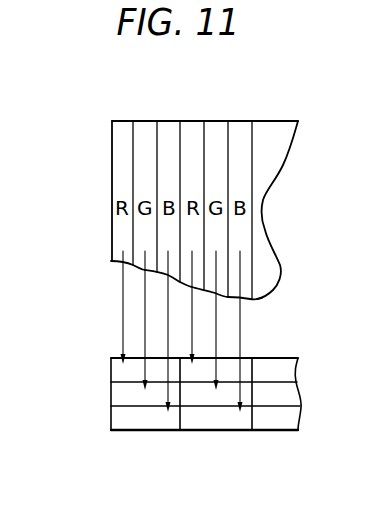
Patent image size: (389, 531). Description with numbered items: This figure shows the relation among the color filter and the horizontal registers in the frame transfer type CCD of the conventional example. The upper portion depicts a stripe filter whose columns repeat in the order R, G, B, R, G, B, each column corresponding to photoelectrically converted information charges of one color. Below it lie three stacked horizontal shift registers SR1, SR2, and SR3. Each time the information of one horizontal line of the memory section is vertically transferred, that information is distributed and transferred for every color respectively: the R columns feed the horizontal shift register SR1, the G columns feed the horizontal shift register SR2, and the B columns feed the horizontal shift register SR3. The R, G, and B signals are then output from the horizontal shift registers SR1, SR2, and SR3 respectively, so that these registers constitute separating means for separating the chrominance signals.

The horizontal shift register SR1 is at (110, 372).
The horizontal shift register SR2 is at (110, 395).
The horizontal shift register SR3 is at (110, 413).